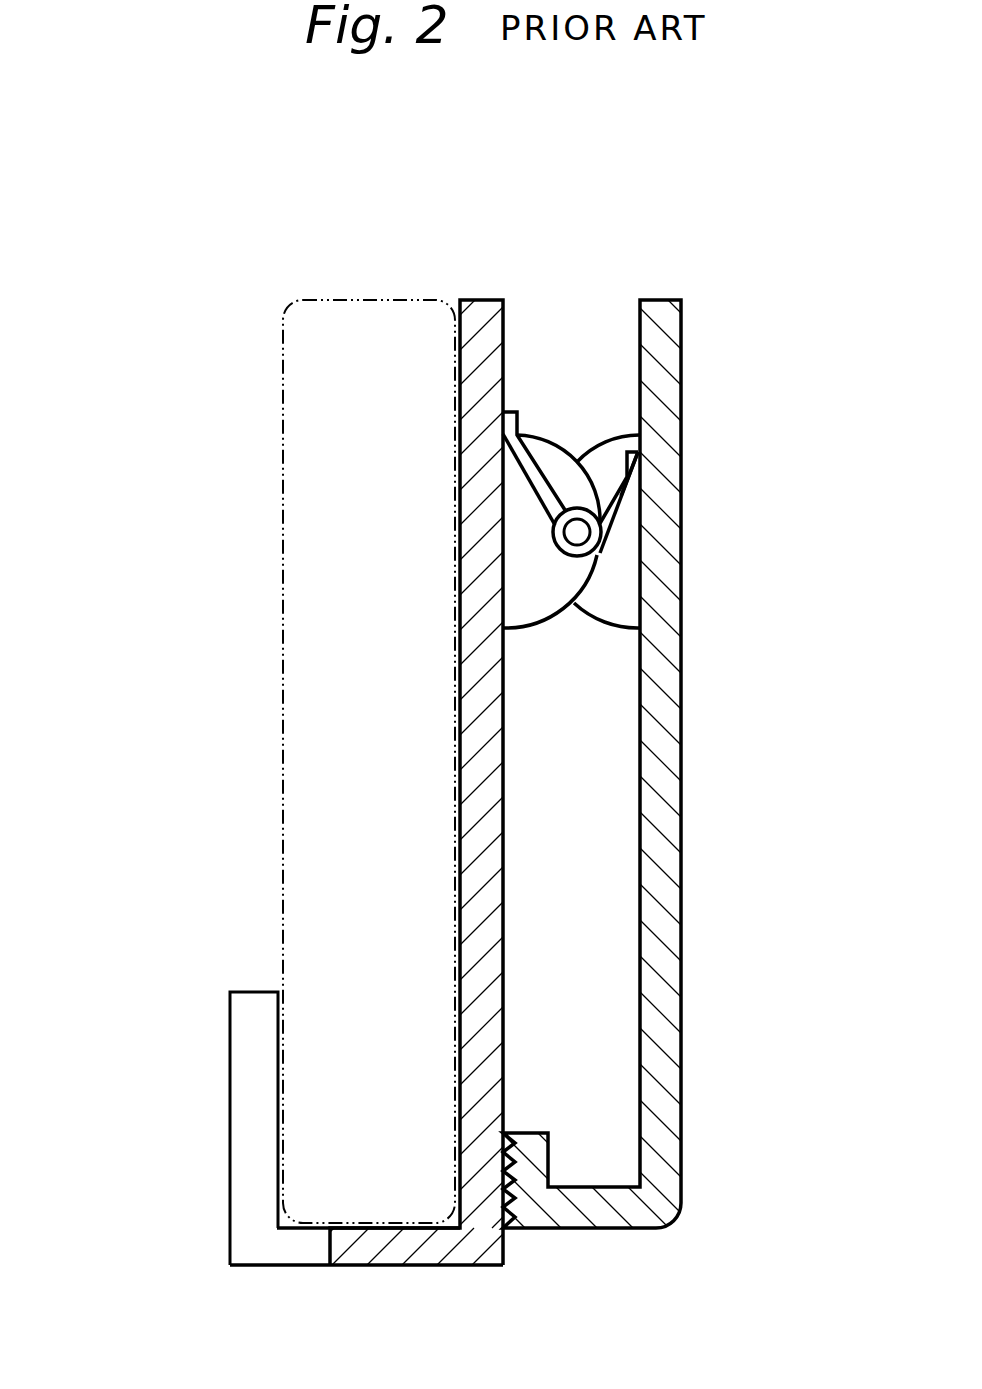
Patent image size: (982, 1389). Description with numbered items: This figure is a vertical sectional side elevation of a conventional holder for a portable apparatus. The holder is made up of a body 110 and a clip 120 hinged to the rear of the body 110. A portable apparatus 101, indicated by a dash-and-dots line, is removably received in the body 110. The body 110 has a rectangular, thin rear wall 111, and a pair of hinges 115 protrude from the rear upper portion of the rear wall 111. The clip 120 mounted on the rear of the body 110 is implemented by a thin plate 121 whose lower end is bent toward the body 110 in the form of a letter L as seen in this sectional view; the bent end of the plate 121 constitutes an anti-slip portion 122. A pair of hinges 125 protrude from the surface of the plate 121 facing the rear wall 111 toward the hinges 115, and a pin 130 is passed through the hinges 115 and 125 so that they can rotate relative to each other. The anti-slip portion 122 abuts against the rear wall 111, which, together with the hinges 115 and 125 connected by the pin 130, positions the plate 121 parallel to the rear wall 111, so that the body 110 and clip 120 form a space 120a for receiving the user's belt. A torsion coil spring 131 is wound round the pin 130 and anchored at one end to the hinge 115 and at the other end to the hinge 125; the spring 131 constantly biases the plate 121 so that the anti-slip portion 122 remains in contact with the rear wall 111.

The portable apparatus 101 is at (355, 330).
The body 110 is at (222, 875).
The rear wall 111 is at (478, 748).
The hinges 115 is at (543, 457).
The clip 120 is at (484, 801).
The space 120a is at (608, 987).
The plate 121 is at (665, 682).
The anti-slip portion 122 is at (553, 1205).
The hinges 125 is at (654, 522).
The pin 130 is at (577, 532).
The torsion coil spring 131 is at (620, 490).